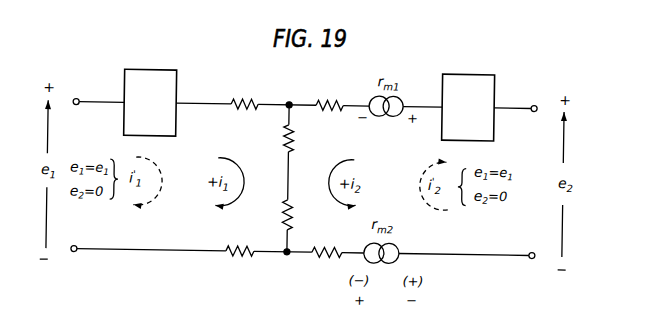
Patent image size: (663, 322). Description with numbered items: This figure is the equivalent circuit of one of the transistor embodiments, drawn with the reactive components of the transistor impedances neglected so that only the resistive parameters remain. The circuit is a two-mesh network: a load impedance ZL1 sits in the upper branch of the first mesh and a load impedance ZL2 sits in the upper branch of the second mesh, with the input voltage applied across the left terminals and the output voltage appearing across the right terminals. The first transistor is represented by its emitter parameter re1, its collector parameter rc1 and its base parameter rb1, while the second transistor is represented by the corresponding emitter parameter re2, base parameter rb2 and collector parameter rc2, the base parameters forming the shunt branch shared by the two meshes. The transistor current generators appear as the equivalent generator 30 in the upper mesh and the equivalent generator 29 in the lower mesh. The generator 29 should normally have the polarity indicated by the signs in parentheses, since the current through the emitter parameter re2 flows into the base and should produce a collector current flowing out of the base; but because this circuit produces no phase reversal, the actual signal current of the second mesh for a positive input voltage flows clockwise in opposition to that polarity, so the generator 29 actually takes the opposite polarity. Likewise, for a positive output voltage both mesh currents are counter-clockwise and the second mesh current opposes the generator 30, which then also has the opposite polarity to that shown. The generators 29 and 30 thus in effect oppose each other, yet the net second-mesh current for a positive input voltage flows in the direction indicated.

The equivalent generator 29 is at (397, 244).
The equivalent generator 30 is at (386, 115).
The load impedance Z_L1 ZL1 is at (150, 102).
The load impedance Z_L2 ZL2 is at (468, 107).
The emitter resistance r_e1 re1 is at (245, 90).
The collector resistance r_c1 rc1 is at (330, 91).
The base resistance r_b1 rb1 is at (300, 139).
The transistor emitter impedance parameter re2 is at (301, 215).
The base resistance r_b2 rb2 is at (239, 270).
The collector resistance r_c2 rc2 is at (326, 271).